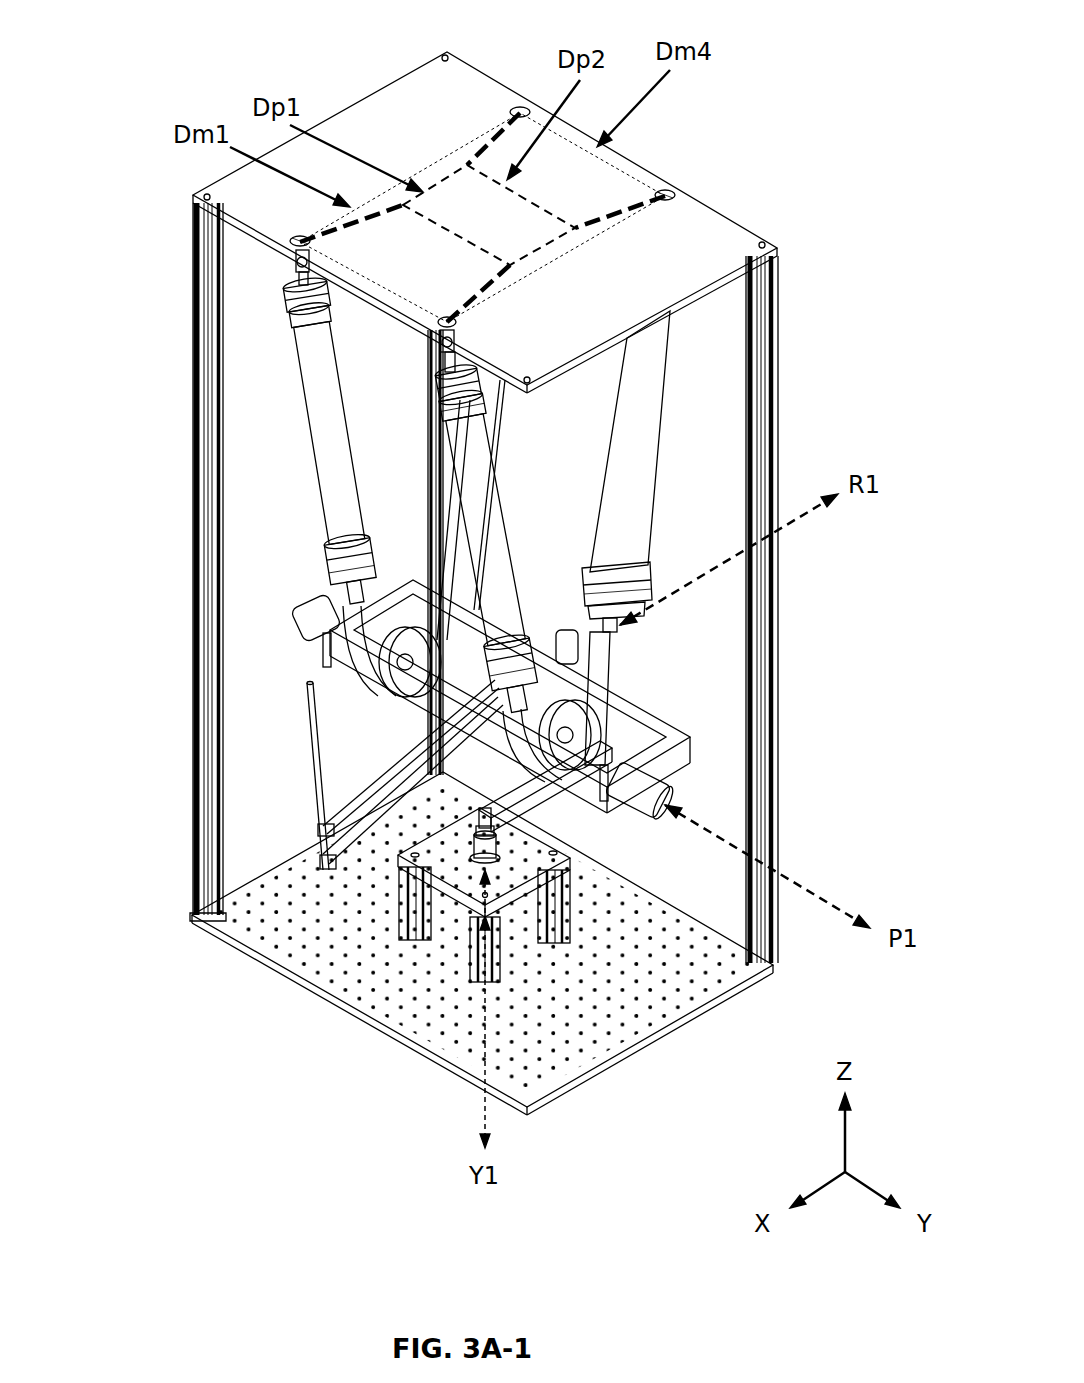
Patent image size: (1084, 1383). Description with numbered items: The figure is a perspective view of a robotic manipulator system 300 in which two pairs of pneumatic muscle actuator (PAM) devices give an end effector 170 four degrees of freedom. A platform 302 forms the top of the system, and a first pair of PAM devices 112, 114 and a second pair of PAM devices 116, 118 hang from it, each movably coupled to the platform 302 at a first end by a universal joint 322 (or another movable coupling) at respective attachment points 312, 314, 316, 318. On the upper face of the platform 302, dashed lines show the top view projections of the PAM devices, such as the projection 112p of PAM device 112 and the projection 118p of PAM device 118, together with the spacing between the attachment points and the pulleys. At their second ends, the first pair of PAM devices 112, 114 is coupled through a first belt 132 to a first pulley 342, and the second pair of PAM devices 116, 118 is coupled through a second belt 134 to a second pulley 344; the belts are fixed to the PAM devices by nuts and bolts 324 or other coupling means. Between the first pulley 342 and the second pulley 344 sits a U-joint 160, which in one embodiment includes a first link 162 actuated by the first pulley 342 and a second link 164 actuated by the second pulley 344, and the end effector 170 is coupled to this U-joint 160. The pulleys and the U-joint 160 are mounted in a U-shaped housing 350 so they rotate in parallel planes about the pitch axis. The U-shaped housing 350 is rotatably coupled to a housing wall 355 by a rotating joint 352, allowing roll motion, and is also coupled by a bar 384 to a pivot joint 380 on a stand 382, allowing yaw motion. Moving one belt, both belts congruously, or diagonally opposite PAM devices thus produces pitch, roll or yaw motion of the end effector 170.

The robotic manipulator system 300 is at (302, 68).
The platform 302 is at (700, 227).
The attachment point 312 is at (520, 107).
The attachment point 314 is at (291, 239).
The attachment point 316 is at (456, 321).
The attachment point 318 is at (675, 193).
The universal joint 322 is at (293, 276).
The nuts and bolts 324 is at (332, 583).
The PAM device 112 is at (489, 421).
The PAM device 114 is at (312, 410).
The PAM device 116 is at (478, 495).
The PAM device 118 is at (640, 383).
The top view projection of PAM device 112 112p is at (487, 143).
The top view projection of PAM device 118 118p is at (615, 207).
The first belt 132 is at (448, 567).
The second belt 134 is at (603, 683).
The U-joint 160 is at (371, 774).
The first link 162 is at (370, 807).
The second link 164 is at (352, 800).
The end effector 170 is at (303, 682).
The first pulley 342 is at (397, 684).
The second pulley 344 is at (568, 778).
The U-shaped housing 350 is at (640, 698).
The rotating joint 352 is at (563, 630).
The housing wall 355 is at (745, 612).
The pivot joint 380 is at (478, 840).
The stand 382 is at (510, 872).
The bar 384 is at (523, 795).